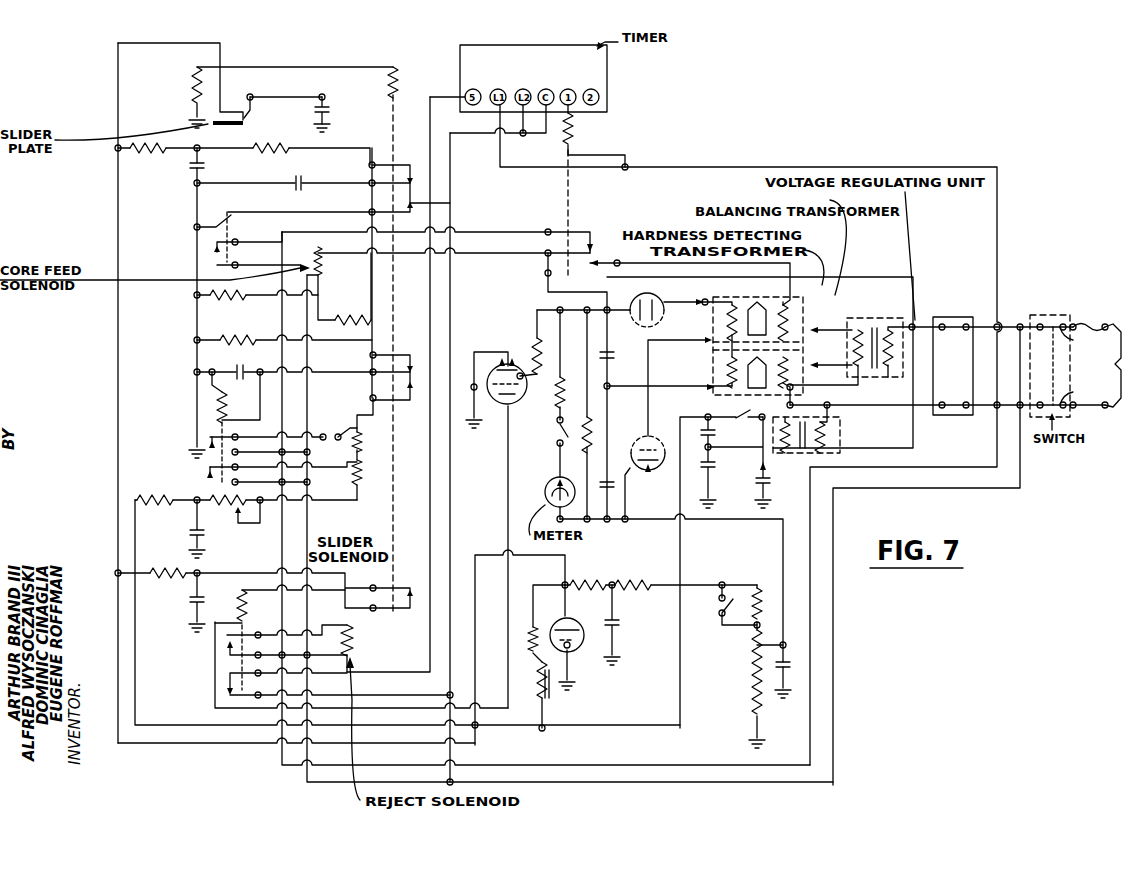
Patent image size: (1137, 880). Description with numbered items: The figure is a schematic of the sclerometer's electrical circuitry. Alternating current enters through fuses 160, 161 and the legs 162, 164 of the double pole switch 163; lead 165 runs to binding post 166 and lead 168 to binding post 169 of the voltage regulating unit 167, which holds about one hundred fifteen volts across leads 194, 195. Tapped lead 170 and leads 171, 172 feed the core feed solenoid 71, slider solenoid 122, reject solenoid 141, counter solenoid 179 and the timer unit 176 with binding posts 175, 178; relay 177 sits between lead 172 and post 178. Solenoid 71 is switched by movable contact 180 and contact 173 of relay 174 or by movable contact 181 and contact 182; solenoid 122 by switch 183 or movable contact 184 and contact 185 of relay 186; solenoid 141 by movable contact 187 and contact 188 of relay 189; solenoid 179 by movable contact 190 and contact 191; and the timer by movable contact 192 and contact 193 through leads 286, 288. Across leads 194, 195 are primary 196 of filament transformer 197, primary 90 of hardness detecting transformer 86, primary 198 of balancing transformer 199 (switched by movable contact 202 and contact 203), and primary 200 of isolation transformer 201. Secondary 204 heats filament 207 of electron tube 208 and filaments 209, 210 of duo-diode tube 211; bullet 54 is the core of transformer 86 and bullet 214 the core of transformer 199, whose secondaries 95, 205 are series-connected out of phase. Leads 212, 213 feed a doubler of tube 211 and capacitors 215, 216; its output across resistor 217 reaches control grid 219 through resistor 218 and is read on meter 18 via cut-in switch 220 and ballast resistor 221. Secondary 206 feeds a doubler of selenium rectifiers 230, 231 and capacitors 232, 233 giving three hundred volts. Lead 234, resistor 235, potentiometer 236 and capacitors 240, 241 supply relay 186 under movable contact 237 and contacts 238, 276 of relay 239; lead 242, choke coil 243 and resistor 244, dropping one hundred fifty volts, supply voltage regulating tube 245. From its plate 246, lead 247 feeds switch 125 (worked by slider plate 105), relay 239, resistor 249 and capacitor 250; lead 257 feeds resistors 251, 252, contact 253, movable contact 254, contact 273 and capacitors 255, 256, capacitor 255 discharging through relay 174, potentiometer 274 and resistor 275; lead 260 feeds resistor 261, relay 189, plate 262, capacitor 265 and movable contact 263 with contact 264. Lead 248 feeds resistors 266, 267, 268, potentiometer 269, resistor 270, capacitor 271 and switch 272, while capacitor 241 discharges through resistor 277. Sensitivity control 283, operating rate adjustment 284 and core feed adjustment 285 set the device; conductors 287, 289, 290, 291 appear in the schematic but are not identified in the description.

The electric meter 18 is at (548, 482).
The representative bullet 54 is at (757, 303).
The core feed solenoid 71 is at (316, 250).
The hardness detecting transformer 86 is at (710, 340).
The primary of hardness detecting transformer 90 is at (790, 300).
The secondary of hardness detecting transformer 95 is at (748, 302).
The slider plate 105 is at (246, 124).
The slider solenoid 122 is at (357, 428).
The switch 125 is at (254, 112).
The reject solenoid 141 is at (356, 645).
The fuse 160 is at (1095, 320).
The fuse 161 is at (1110, 405).
The leg of switch 162 is at (1092, 345).
The single throw double pole switch 163 is at (1052, 315).
The leg of switch 164 is at (1092, 390).
The lead 165 is at (1012, 325).
The binding post 166 is at (955, 318).
The voltage regulating unit 167 is at (968, 374).
The lead 168 is at (1010, 410).
The binding post 169 is at (966, 412).
The lead 170 is at (683, 782).
The lead 171 is at (622, 765).
The lead 172 is at (665, 167).
The contact 173 is at (215, 262).
The relay 174 is at (232, 226).
The binding post 175 is at (498, 89).
The electro-mechanical timer unit 176 is at (608, 70).
The relay 177 is at (575, 130).
The binding post 178 is at (568, 89).
The counter solenoid 179 is at (368, 455).
The movable contact 180 is at (240, 260).
The movable contact 181 is at (548, 250).
The contact 182 is at (590, 240).
The switch 183 is at (345, 430).
The movable contact 184 is at (212, 440).
The contact 185 is at (210, 437).
The relay 186 is at (215, 400).
The movable contact 187 is at (227, 635).
The contact 188 is at (228, 652).
The relay 189 is at (237, 598).
The movable contact 190 is at (188, 452).
The contact 191 is at (210, 467).
The movable contact 192 is at (226, 696).
The contact 193 is at (228, 673).
The lead 194 is at (942, 312).
The lead 195 is at (870, 400).
The primary of filament transformer 196 is at (890, 318).
The filament transformer 197 is at (858, 318).
The primary of balancing transformer 198 is at (800, 388).
The balancing transformer 199 is at (695, 373).
The primary of isolation transformer 200 is at (820, 436).
The isolation transformer 201 is at (833, 467).
The movable contact 202 is at (545, 272).
The contact 203 is at (600, 262).
The secondary of filament transformer 204 is at (860, 370).
The secondary of balancing transformer 205 is at (740, 414).
The secondary of isolation transformer 206 is at (795, 452).
The filament 207 is at (518, 334).
The electron tube 208 is at (510, 412).
The filament 209 is at (668, 306).
The filament 210 is at (655, 428).
The duo-diode electron tube 211 is at (648, 474).
The lead 212 is at (745, 300).
The lead 213 is at (670, 405).
The representative bullet 214 is at (760, 405).
The capacitor 215 is at (608, 362).
The capacitor 216 is at (612, 478).
The resistor 217 is at (592, 425).
The resistor 218 is at (535, 326).
The control grid 219 is at (471, 392).
The cut-in switch 220 is at (557, 445).
The ballast resistor 221 is at (562, 374).
The selenium rectifier 230 is at (714, 432).
The selenium rectifier 231 is at (766, 482).
The capacitor 232 is at (715, 464).
The capacitor 233 is at (716, 502).
The lead 234 is at (682, 668).
The resistor 235 is at (155, 515).
The potentiometer 236 is at (236, 500).
The movable contact 237 is at (370, 370).
The contact 238 is at (410, 402).
The relay 239 is at (398, 70).
The capacitor 240 is at (190, 536).
The capacitor 241 is at (238, 368).
The lead 242 is at (546, 717).
The choke coil 243 is at (537, 705).
The resistor 244 is at (533, 615).
The voltage regulating tube 245 is at (571, 652).
The plate 246 is at (574, 628).
The lead 247 is at (500, 555).
The lead 248 is at (580, 582).
The resistor 249 is at (197, 75).
The capacitor 250 is at (330, 109).
The resistor 251 is at (207, 176).
The resistor 252 is at (330, 130).
The contact 253 is at (410, 160).
The movable contact 254 is at (368, 210).
The capacitor 255 is at (305, 178).
The branch capacitor 256 is at (206, 168).
The lead 257 is at (165, 165).
The lead 260 is at (156, 573).
The resistor 261 is at (218, 573).
The plate 262 is at (500, 420).
The movable contact 263 is at (403, 588).
The contact 264 is at (356, 630).
The capacitor 265 is at (190, 608).
The resistor 266 is at (632, 582).
The resistor 267 is at (655, 580).
The resistor 268 is at (763, 588).
The potentiometer 269 is at (752, 662).
The resistor 270 is at (748, 700).
The capacitor 271 is at (620, 622).
The switch 272 is at (718, 606).
The contact 273 is at (450, 203).
The potentiometer 274 is at (352, 318).
The resistor 275 is at (215, 300).
The contact 276 is at (412, 355).
The resistor 277 is at (245, 338).
The sensitivity level control 283 is at (790, 650).
The operating rate adjustment 284 is at (238, 522).
The core feed adjustment 285 is at (337, 261).
The lead 286 is at (450, 172).
The conductor 287 is at (523, 136).
The lead 288 is at (448, 283).
The conductor 289 is at (508, 520).
The capacitor 290 is at (795, 672).
The conductor 291 is at (783, 538).